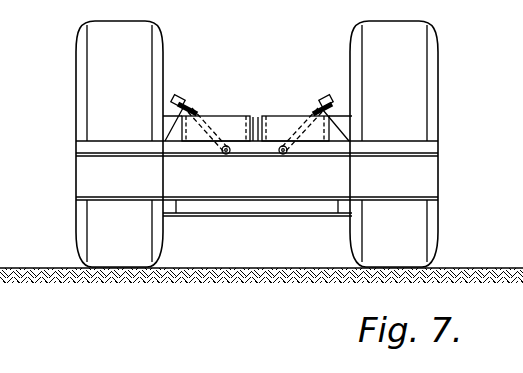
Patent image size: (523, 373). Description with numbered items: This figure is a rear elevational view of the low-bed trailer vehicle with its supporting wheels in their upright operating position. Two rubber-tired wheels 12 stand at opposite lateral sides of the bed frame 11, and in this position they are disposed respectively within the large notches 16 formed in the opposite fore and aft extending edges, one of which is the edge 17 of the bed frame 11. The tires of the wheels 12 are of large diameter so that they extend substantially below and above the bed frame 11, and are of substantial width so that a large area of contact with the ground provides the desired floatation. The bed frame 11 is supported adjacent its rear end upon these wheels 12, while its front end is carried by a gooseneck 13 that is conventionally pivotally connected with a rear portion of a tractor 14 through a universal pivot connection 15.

The bed frame 11 is at (256, 143).
The wheels 12 is at (80, 57).
The gooseneck 13 is at (189, 97).
The tractor 14 is at (195, 105).
The universal pivot connection 15 is at (222, 154).
The notches 16 is at (267, 142).
The fore and aft extending edge 17 is at (238, 116).